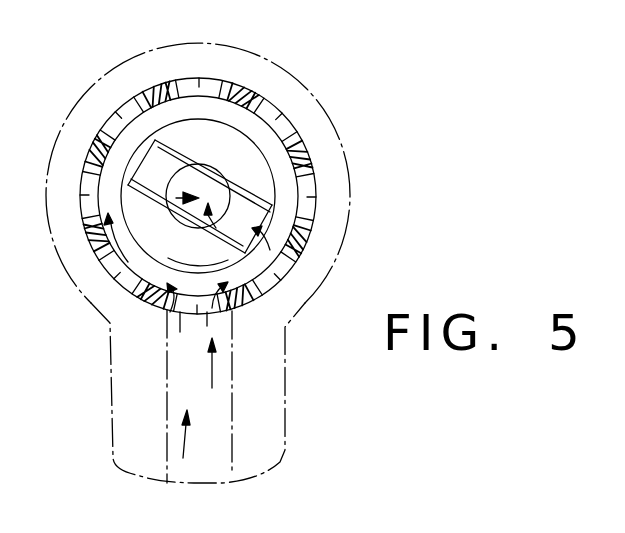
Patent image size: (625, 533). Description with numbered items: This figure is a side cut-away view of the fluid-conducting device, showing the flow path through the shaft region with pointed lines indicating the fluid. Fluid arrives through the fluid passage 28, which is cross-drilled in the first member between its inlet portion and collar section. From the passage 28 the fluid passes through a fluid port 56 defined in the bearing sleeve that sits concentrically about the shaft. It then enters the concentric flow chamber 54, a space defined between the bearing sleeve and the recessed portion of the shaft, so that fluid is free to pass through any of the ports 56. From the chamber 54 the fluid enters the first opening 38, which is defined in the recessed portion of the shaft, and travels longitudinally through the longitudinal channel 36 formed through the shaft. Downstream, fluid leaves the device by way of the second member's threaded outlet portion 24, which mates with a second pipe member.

The outlet portion 24 is at (536, 0).
The fluid passage 28 is at (222, 487).
The longitudinal channel 36 is at (201, 182).
The first opening 38 is at (144, 166).
The concentric flow chamber 54 is at (170, 110).
The fluid ports 56 is at (273, 102).